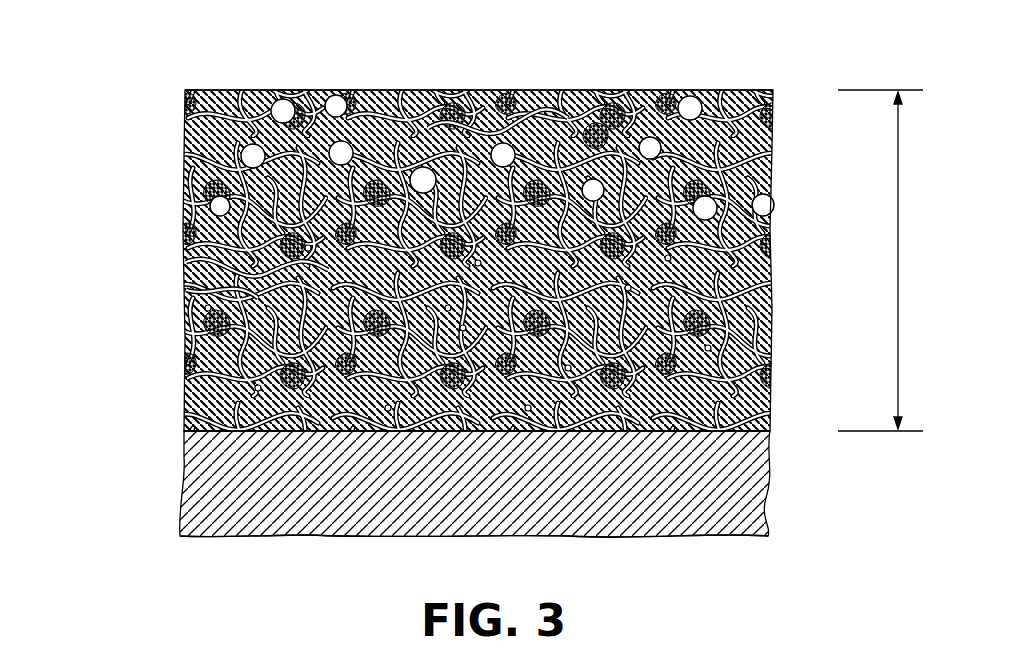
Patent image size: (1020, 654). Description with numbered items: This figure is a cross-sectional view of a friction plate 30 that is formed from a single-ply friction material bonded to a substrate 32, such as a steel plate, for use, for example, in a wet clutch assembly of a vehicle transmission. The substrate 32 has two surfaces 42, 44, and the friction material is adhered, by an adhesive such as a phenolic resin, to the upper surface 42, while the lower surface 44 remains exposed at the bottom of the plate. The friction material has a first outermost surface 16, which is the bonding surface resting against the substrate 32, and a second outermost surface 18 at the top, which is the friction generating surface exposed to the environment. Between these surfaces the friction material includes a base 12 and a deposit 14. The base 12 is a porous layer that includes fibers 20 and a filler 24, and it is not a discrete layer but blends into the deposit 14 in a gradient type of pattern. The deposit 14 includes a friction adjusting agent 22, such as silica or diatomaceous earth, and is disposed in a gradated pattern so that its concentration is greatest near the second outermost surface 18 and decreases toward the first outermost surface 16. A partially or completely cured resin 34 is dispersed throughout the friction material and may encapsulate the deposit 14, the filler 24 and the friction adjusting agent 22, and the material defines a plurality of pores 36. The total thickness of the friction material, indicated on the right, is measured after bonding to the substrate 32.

The friction plate 30 is at (103, 142).
The deposit 14 is at (773, 82).
The base 12 is at (773, 227).
The first outermost surface 16 is at (208, 430).
The second outermost surface 18 is at (650, 78).
The fibers 20 is at (433, 130).
The friction adjusting agent 22 is at (366, 128).
The filler 24 is at (750, 190).
The substrate 32 is at (725, 470).
The partially cured or completely cured resin 34 is at (176, 254).
The pores 36 is at (590, 118).
The surface of the substrate 42 is at (733, 426).
The surface of the substrate 44 is at (700, 530).